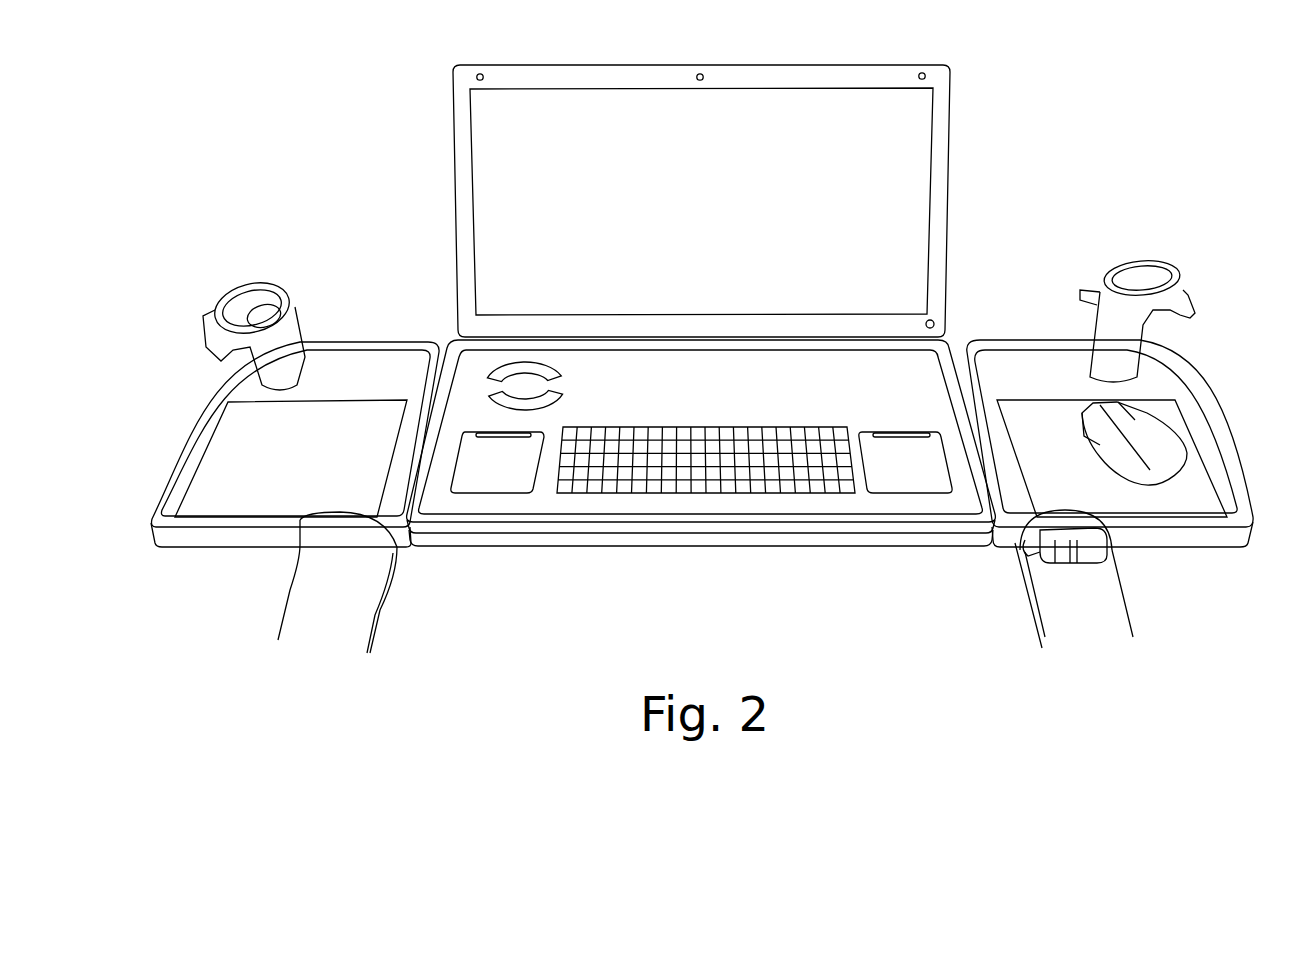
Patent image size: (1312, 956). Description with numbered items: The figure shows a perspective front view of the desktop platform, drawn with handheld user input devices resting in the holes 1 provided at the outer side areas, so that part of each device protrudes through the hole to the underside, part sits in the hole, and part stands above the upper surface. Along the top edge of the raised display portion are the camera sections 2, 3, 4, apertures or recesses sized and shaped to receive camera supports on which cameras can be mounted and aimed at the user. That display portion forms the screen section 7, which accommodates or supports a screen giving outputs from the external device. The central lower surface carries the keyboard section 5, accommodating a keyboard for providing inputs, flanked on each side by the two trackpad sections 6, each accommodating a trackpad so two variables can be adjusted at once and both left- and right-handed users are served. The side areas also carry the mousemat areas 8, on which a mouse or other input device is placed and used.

The hole 1 is at (310, 370).
The camera section 2 is at (478, 76).
The camera section 3 is at (702, 76).
The camera section 4 is at (925, 77).
The keyboard section 5 is at (715, 493).
The trackpad section 6 is at (490, 493).
The screen section 7 is at (465, 225).
The mousemat area 8 is at (301, 475).